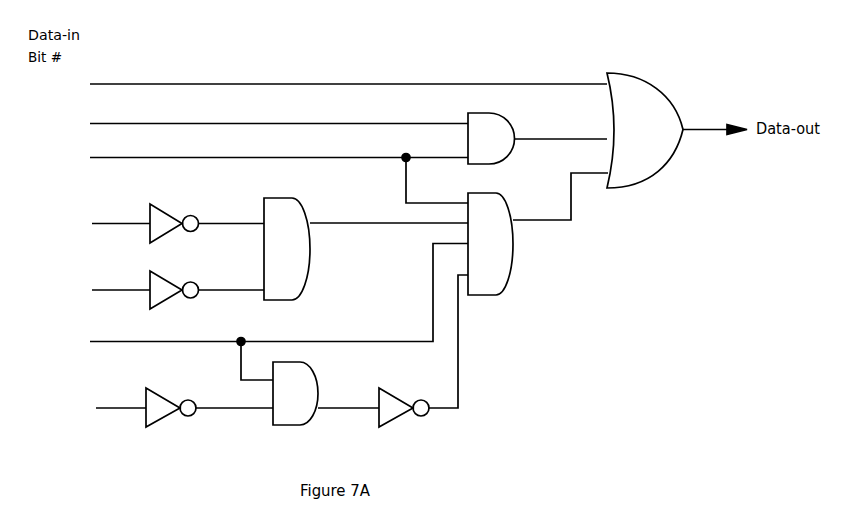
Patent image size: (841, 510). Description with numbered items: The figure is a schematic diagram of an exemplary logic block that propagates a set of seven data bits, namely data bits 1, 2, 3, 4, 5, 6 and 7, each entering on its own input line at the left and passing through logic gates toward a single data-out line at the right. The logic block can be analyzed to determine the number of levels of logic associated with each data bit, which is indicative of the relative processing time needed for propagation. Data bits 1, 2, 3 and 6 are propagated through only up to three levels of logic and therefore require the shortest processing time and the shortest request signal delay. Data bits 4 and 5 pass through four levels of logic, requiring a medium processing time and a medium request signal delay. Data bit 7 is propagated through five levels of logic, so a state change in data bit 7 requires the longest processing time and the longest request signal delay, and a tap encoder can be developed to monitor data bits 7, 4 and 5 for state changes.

The data bit 1 is at (328, 83).
The data bit 2 is at (259, 124).
The data bit 3 is at (259, 177).
The data bit 4 is at (157, 223).
The data bit 5 is at (157, 290).
The data bit 6 is at (259, 312).
The data bit 7 is at (161, 407).